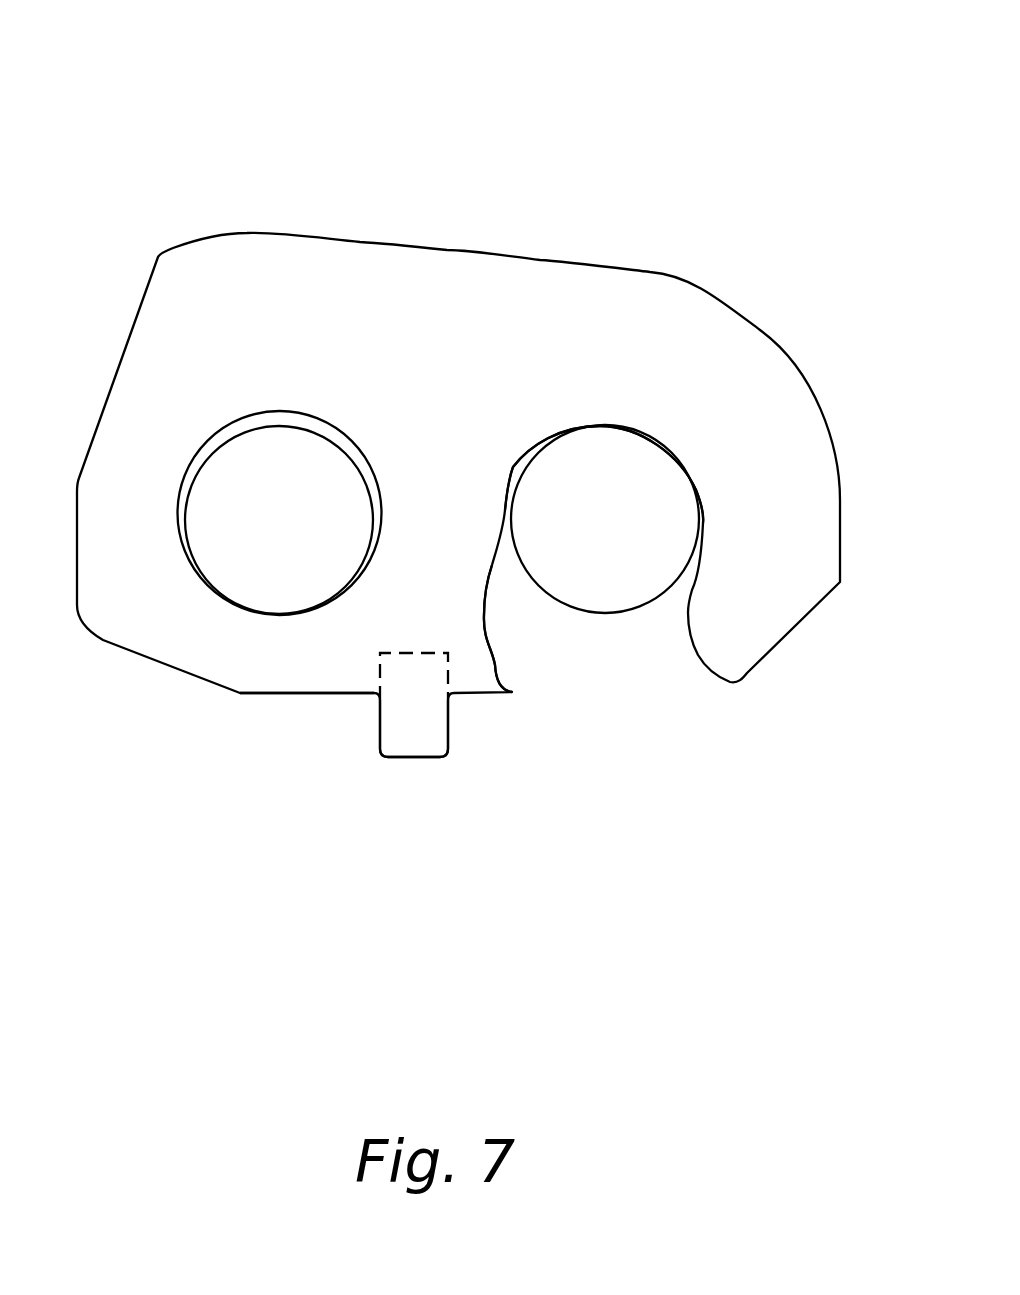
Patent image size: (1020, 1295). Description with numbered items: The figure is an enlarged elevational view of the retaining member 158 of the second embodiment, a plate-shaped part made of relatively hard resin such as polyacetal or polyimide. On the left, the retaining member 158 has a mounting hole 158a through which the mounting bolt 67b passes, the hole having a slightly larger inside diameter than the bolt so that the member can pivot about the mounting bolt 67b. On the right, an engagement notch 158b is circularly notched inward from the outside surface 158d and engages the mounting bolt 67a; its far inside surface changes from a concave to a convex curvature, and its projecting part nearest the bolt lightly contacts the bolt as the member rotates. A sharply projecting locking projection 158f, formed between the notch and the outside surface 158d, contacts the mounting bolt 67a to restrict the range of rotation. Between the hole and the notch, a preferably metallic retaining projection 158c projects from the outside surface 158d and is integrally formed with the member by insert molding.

The retaining member 158 is at (572, 237).
The mounting hole 158a is at (203, 448).
The engagement notch 158b is at (503, 552).
The retaining projection 158c is at (417, 738).
The outside surface 158d is at (317, 693).
The locking projection 158f is at (512, 692).
The mounting bolt 67a is at (602, 562).
The mounting bolt 67b is at (302, 482).